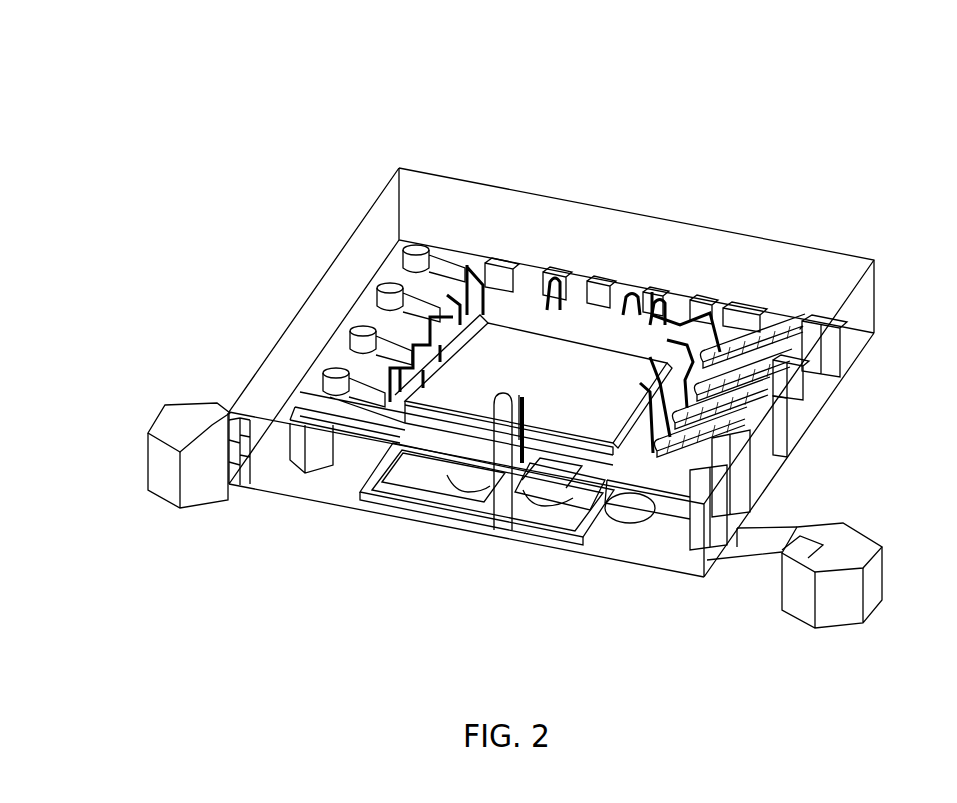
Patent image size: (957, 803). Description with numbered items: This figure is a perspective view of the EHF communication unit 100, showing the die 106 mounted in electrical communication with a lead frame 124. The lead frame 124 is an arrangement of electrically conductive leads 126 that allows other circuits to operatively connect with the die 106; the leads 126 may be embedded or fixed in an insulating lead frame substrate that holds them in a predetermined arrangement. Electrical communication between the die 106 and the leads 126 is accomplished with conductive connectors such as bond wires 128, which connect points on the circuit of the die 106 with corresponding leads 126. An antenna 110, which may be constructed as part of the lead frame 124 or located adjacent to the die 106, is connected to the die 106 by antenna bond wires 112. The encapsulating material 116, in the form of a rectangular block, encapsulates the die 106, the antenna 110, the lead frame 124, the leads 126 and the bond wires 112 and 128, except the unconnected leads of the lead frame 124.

The EHF communication unit 100 is at (160, 97).
The die 106 is at (533, 300).
The antenna 110 is at (390, 445).
The antenna bond wires 112 is at (495, 530).
The encapsulating material 116 is at (681, 267).
The lead frame 124 is at (388, 268).
The leads 126 is at (777, 333).
The bond wires 128 is at (360, 303).